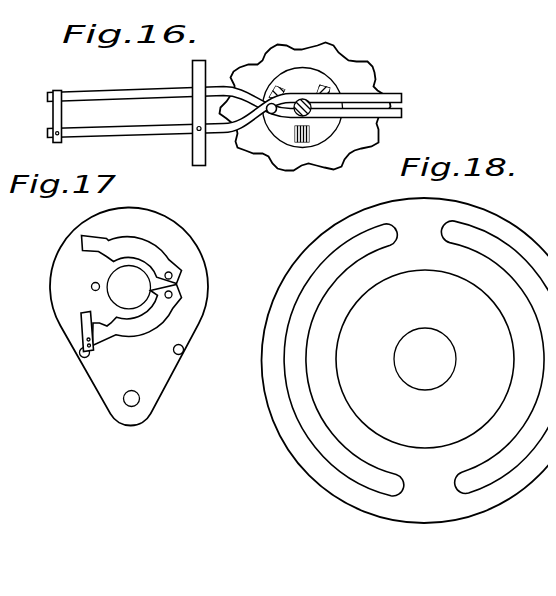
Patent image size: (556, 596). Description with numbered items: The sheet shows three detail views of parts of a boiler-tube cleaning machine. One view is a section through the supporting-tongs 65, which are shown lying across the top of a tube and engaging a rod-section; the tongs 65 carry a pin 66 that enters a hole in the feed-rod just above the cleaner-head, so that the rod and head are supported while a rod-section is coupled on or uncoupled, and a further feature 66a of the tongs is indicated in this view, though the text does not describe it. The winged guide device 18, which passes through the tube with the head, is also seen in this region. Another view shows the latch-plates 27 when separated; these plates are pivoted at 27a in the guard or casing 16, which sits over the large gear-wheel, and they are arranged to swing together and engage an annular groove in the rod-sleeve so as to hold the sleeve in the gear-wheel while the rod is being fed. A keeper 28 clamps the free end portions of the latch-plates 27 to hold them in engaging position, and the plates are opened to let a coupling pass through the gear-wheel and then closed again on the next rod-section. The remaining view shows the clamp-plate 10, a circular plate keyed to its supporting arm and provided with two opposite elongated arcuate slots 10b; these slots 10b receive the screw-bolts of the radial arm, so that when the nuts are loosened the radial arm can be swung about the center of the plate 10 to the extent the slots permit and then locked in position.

In FIG. 16, the supporting-tongs 65 is at (147, 96).
In FIG. 16, the pin 66 is at (300, 132).
In FIG. 16, the cam wheel recess 66a is at (318, 100).
In FIG. 16, the winged guide device 18 is at (306, 138).
In FIG. 17, the guard or casing 16 is at (129, 317).
In FIG. 17, the latch-plates 27 is at (133, 241).
In FIG. 17, the pivot of latch-plates 27a is at (150, 300).
In FIG. 17, the keeper 28 is at (80, 313).
In FIG. 18, the clamp-plate 10 is at (405, 360).
In FIG. 18, the elongated arcuate slots 10b is at (532, 422).